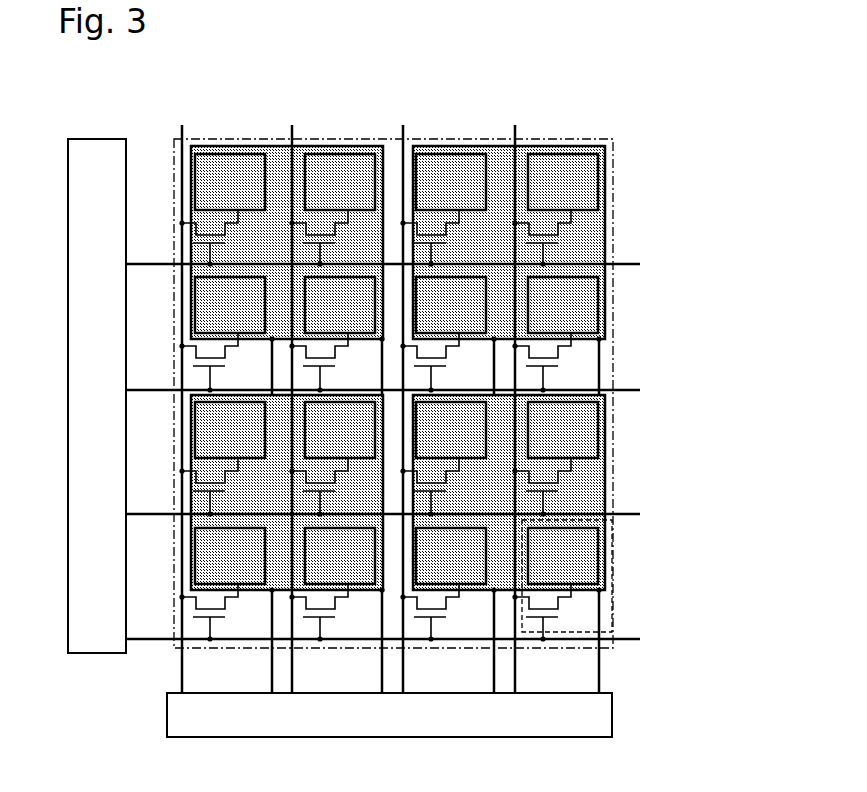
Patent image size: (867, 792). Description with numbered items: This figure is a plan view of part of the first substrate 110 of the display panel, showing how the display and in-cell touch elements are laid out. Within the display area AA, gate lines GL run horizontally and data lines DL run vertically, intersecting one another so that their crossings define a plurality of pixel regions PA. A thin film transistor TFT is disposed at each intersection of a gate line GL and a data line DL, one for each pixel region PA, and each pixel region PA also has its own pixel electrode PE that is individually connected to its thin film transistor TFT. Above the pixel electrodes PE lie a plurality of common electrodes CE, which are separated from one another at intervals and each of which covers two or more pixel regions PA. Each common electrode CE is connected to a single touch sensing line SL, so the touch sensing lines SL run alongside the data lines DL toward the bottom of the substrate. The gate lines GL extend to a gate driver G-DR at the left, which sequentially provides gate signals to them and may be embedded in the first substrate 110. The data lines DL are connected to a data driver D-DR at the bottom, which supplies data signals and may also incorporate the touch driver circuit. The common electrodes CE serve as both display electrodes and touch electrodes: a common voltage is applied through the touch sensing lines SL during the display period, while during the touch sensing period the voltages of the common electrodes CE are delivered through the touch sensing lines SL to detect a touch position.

The first substrate 110 is at (98, 118).
The gate lines GL is at (383, 439).
The data lines DL is at (363, 409).
The touch sensing lines SL is at (419, 516).
The pixel electrodes PE is at (396, 369).
The thin film transistors TFT is at (383, 426).
The common electrodes CE is at (605, 241).
The display area AA is at (621, 333).
The pixel regions PA is at (621, 533).
The gate driver G-DR is at (97, 653).
The data driver D-DR is at (612, 712).